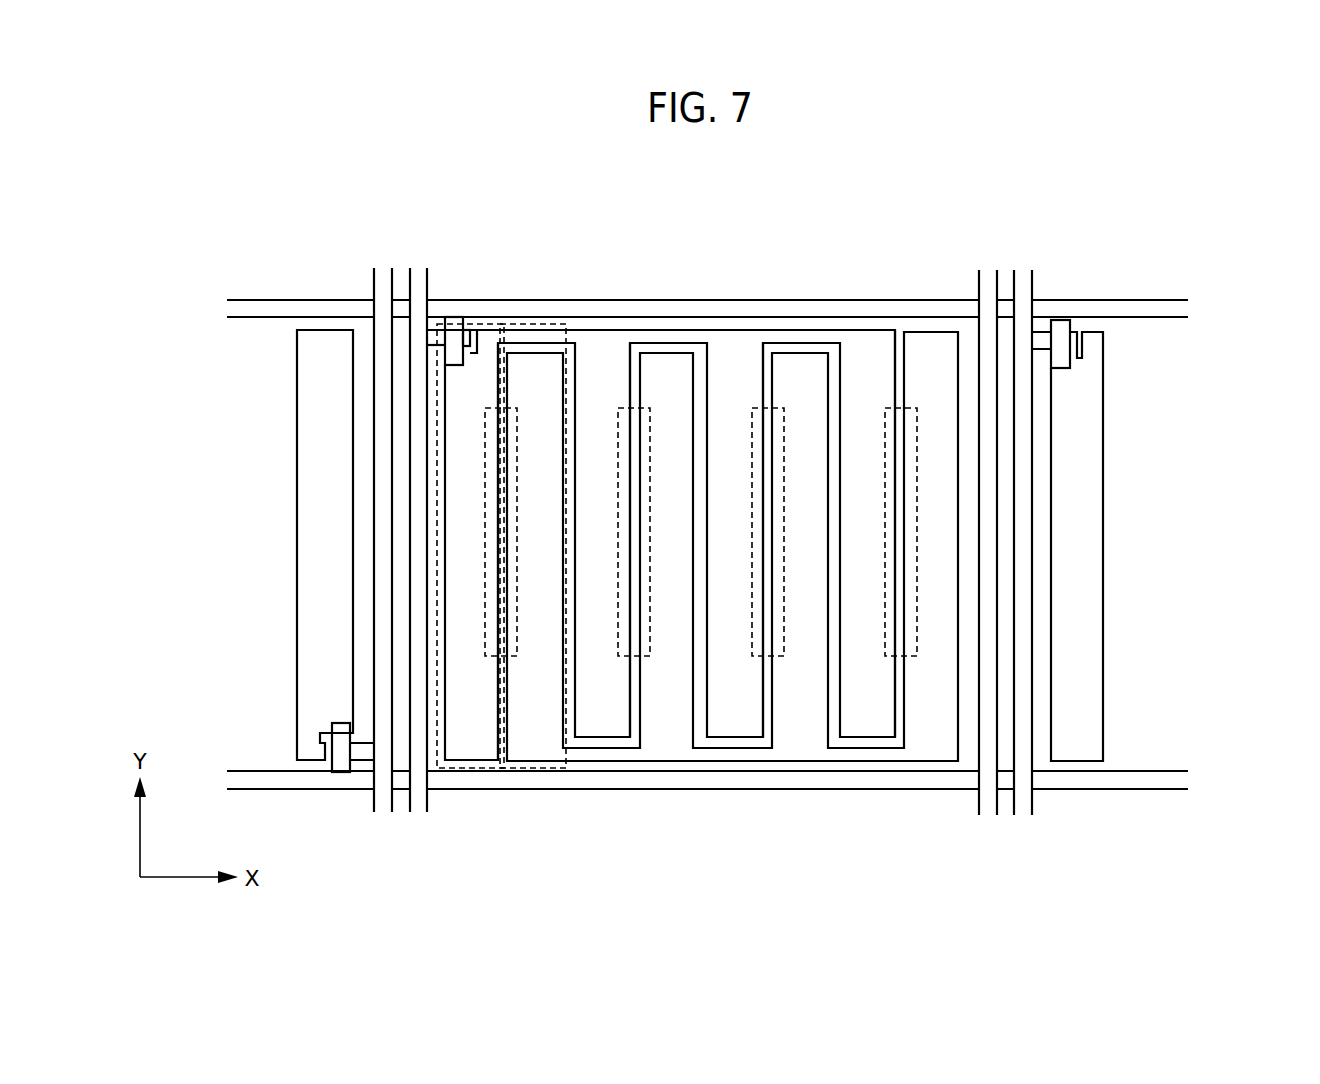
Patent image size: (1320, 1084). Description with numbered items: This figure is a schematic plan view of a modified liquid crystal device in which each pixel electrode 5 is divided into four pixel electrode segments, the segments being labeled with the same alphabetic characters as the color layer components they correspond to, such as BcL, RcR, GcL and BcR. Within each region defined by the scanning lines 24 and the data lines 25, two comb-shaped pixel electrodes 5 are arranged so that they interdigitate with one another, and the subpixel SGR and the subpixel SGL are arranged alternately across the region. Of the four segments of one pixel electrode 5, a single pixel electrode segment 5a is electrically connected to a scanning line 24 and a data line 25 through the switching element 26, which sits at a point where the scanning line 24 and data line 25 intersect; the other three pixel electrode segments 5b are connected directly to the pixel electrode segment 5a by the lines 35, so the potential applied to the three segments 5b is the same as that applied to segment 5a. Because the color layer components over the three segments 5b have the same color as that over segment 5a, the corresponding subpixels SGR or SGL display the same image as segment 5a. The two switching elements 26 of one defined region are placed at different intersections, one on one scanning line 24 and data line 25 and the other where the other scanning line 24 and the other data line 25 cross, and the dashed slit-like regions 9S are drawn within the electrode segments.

The pixel electrode 5 is at (577, 201).
The pixel electrode segment 5a is at (488, 337).
The pixel electrode segment 5b is at (855, 342).
The scanning line 24 is at (1188, 310).
The data line 25 is at (378, 810).
The switching element 26 is at (453, 323).
The line 35 is at (850, 753).
The slit 9S is at (513, 657).
The subpixel SGR is at (465, 770).
The subpixel SGL is at (530, 770).
The blue left sub-pixel BcL is at (335, 551).
The blue right sub-pixel BcR is at (1067, 540).
The red right sub-pixel RcR is at (661, 545).
The green left sub-pixel GcL is at (732, 546).